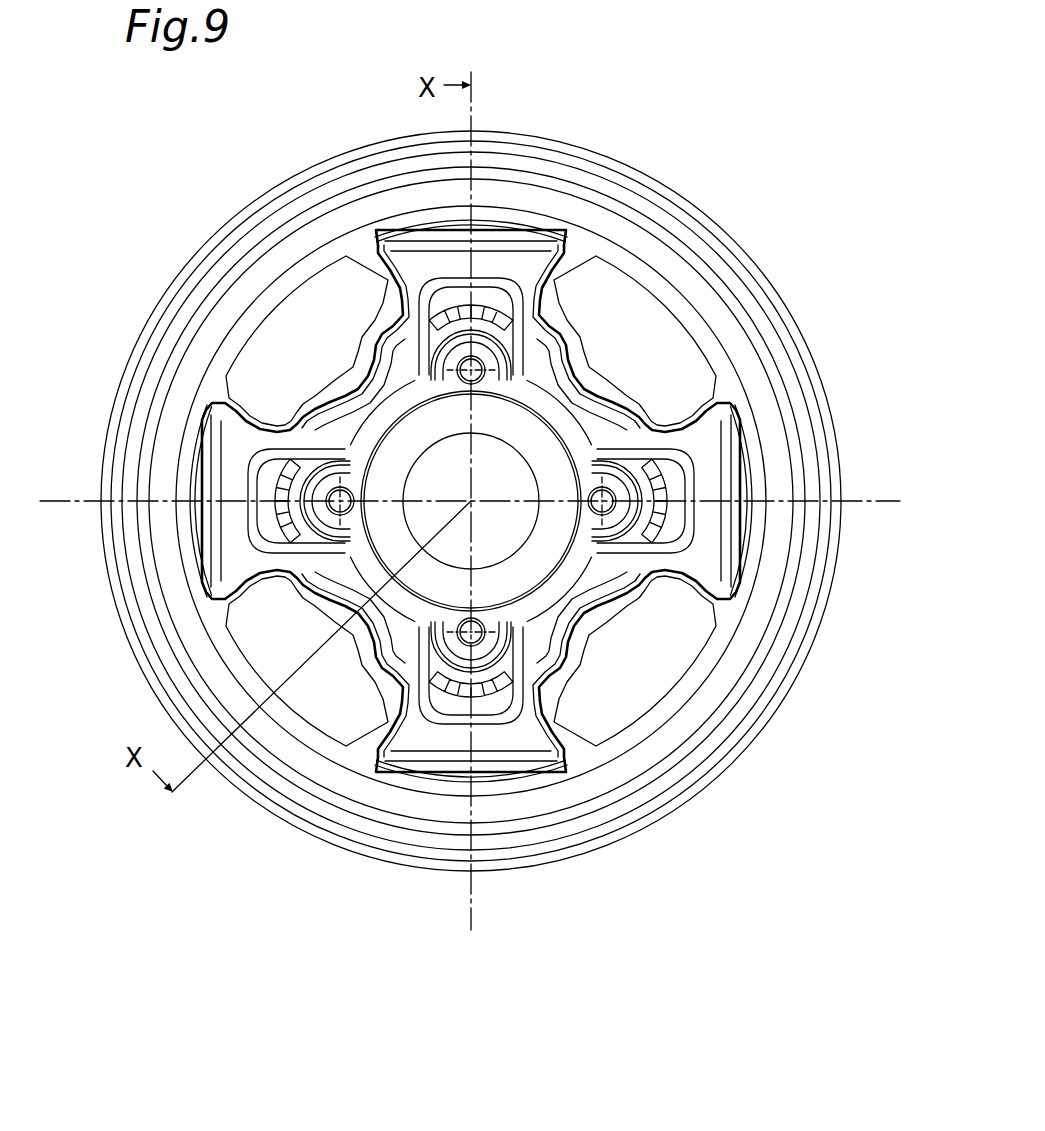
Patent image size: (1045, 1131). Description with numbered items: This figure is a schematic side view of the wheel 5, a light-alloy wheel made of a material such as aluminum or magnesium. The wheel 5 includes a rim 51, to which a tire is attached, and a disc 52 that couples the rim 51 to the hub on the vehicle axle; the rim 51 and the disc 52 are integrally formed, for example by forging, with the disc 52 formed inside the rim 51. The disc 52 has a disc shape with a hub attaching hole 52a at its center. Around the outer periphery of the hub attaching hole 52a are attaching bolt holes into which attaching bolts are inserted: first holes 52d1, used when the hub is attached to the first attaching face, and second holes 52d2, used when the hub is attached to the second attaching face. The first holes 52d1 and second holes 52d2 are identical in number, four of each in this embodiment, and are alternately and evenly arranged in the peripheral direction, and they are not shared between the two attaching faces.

The wheel 5 is at (692, 187).
The rim 51 is at (327, 168).
The disc 52 is at (537, 407).
The hub attaching hole 52a is at (517, 600).
The first holes 52d1 is at (471, 370).
The second holes 52d2 is at (385, 397).